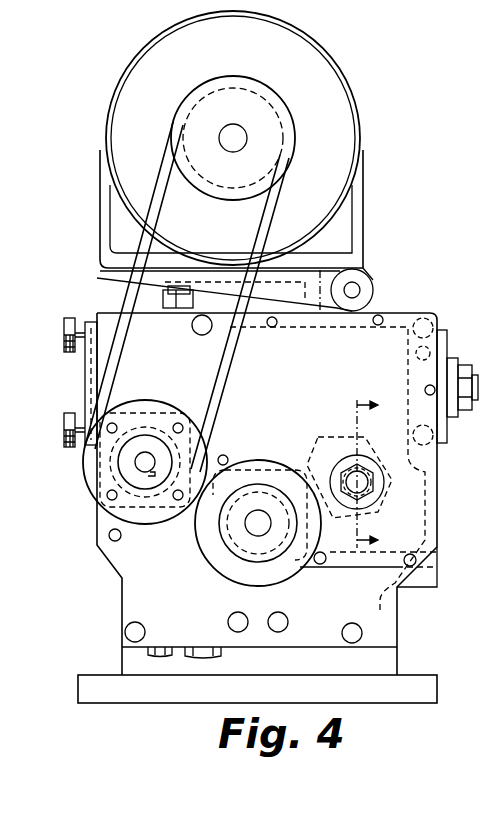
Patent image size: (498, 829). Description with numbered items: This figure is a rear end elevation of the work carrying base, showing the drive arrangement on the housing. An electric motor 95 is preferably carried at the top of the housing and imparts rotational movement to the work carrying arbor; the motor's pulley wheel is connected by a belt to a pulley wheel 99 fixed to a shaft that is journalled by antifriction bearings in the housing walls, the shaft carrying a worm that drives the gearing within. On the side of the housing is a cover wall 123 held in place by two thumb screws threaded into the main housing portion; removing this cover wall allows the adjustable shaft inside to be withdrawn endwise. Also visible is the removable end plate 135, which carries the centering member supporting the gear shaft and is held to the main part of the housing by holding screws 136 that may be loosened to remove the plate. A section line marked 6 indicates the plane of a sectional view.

The drive pulley 95 is at (156, 66).
The driven pulley 99 is at (152, 525).
The mounting plate 123 is at (84, 388).
The housing 135 is at (410, 497).
The screw 136 is at (382, 315).
The section line 6- 6 is at (360, 468).